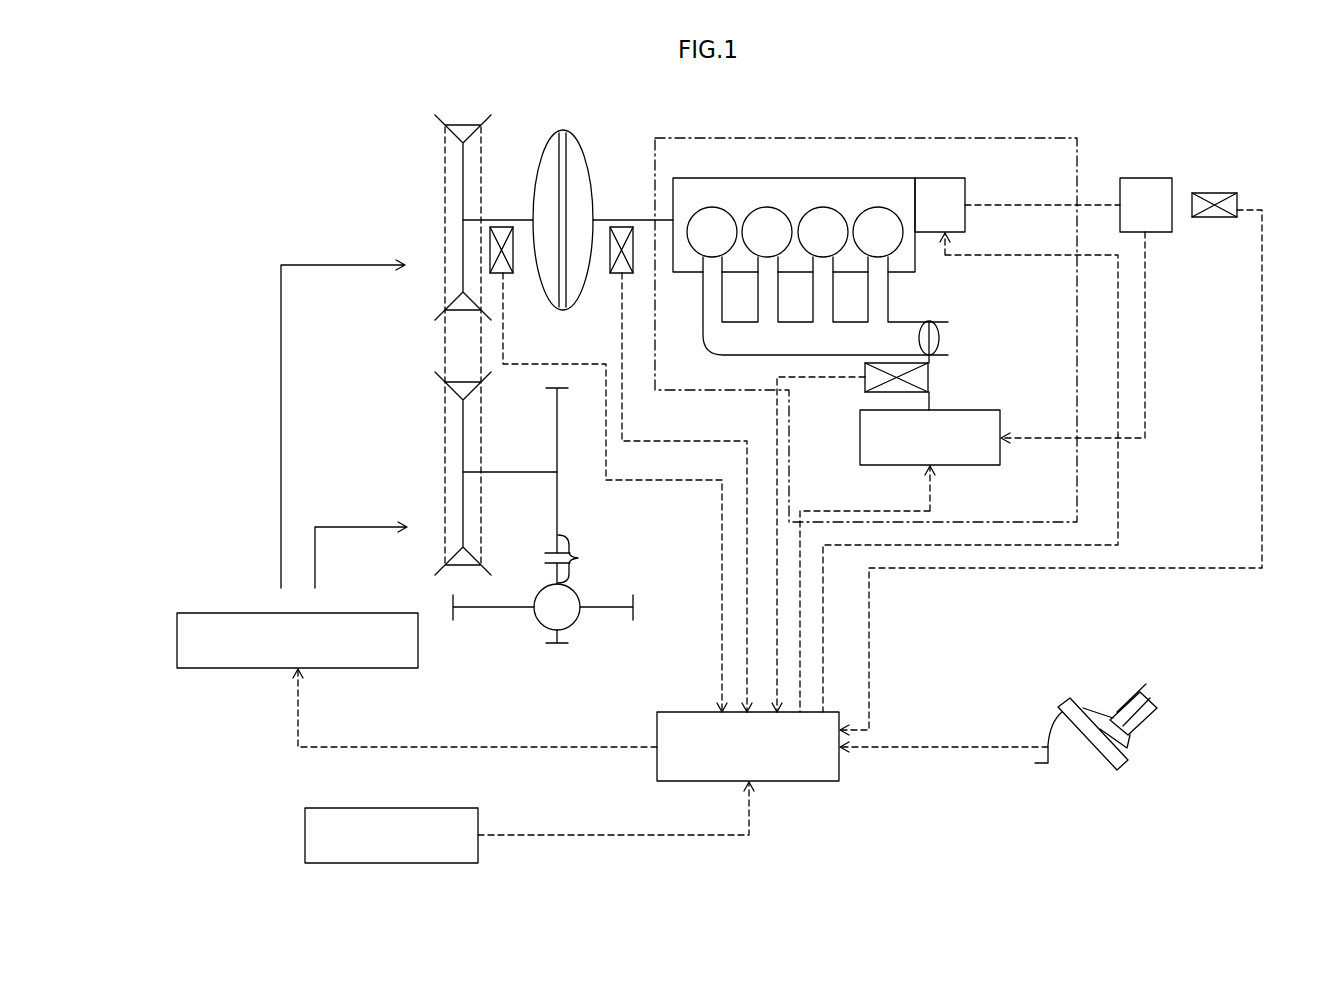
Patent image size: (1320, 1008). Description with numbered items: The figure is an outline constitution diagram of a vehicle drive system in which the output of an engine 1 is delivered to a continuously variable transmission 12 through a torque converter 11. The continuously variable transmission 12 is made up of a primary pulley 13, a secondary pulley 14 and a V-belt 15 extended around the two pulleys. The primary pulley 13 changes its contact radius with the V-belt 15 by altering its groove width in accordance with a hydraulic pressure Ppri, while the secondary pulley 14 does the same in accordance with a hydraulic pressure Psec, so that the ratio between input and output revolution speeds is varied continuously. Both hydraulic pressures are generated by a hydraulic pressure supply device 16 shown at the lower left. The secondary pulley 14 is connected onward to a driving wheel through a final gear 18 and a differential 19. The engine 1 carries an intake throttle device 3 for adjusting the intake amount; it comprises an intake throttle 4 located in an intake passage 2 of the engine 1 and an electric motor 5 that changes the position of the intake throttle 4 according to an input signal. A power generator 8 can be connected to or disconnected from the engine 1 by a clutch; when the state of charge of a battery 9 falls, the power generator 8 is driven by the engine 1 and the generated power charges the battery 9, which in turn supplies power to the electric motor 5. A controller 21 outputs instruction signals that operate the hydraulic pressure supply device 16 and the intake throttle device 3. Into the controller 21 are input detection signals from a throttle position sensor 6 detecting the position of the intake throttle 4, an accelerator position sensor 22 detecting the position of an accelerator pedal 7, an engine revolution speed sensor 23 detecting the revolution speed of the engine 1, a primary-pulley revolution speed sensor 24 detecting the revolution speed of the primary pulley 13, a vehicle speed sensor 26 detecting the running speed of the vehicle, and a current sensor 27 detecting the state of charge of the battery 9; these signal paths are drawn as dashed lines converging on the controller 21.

The engine 1 is at (987, 132).
The intake passage 2 is at (909, 322).
The intake throttle device 3 is at (944, 379).
The intake throttle 4 is at (940, 337).
The electric motor 5 is at (1001, 420).
The throttle position sensor 6 is at (865, 385).
The accelerator pedal 7 is at (1073, 698).
The power generator 8 is at (933, 178).
The battery 9 is at (1143, 178).
The torque converter 11 is at (584, 149).
The continuously variable transmission 12 is at (372, 208).
The primary pulley 13 is at (437, 126).
The secondary pulley 14 is at (441, 381).
The V-belt 15 is at (445, 338).
The hydraulic pressure supply device 16 is at (228, 613).
The final gear 18 is at (578, 486).
The differential 19 is at (580, 597).
The controller 21 is at (840, 720).
The accelerator position sensor 22 is at (1052, 730).
The engine revolution speed sensor 23 is at (622, 274).
The primary-pulley revolution speed sensor 24 is at (503, 274).
The vehicle speed sensor 26 is at (305, 832).
The current sensor 27 is at (1215, 193).